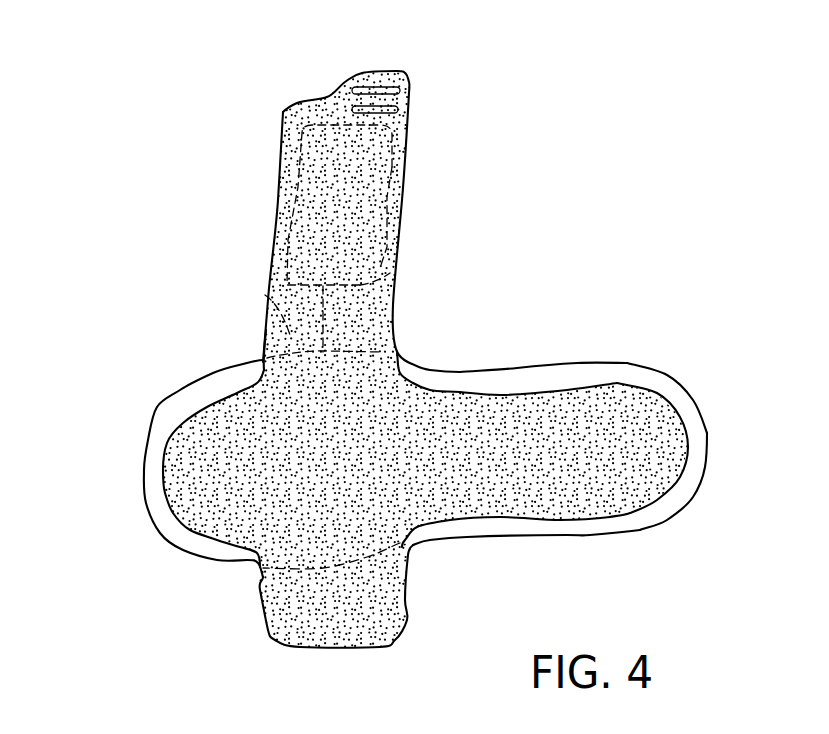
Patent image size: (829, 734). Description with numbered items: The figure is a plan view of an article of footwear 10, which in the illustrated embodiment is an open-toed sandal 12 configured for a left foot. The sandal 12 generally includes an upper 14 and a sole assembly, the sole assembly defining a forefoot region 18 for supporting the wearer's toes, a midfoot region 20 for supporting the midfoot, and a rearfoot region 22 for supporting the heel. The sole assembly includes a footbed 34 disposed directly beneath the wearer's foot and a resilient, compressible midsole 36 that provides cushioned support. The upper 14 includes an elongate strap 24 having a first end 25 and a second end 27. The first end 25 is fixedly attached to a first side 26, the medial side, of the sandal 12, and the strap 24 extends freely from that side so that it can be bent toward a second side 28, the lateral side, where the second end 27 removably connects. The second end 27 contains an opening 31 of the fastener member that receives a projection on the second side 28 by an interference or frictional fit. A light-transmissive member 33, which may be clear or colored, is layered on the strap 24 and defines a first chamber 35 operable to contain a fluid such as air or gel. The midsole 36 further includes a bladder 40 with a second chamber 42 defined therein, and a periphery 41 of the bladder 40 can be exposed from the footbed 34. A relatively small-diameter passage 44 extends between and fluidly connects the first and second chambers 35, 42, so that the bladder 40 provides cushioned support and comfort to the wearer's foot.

The article of footwear 10 is at (178, 238).
The sandal 12 is at (143, 438).
The upper 14 is at (393, 303).
The forefoot region 18 is at (212, 457).
The midfoot region 20 is at (412, 424).
The rearfoot region 22 is at (665, 435).
The strap 24 is at (290, 167).
The first end 25 is at (265, 337).
The first side 26 is at (363, 367).
The second end 27 is at (303, 105).
The second side 28 is at (297, 560).
The opening 31 is at (373, 90).
The light-transmissive member 33 is at (407, 155).
The footbed 34 is at (548, 447).
The first chamber 35 is at (410, 180).
The midsole 36 is at (627, 363).
The bladder 40 is at (590, 540).
The periphery 41 is at (708, 445).
The second chamber 42 is at (265, 295).
The passage 44 is at (393, 277).